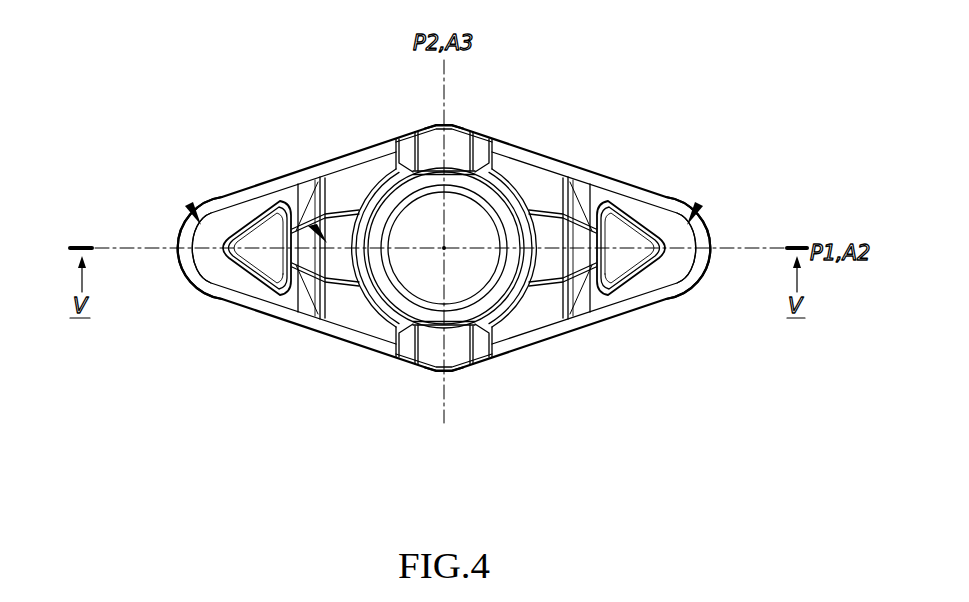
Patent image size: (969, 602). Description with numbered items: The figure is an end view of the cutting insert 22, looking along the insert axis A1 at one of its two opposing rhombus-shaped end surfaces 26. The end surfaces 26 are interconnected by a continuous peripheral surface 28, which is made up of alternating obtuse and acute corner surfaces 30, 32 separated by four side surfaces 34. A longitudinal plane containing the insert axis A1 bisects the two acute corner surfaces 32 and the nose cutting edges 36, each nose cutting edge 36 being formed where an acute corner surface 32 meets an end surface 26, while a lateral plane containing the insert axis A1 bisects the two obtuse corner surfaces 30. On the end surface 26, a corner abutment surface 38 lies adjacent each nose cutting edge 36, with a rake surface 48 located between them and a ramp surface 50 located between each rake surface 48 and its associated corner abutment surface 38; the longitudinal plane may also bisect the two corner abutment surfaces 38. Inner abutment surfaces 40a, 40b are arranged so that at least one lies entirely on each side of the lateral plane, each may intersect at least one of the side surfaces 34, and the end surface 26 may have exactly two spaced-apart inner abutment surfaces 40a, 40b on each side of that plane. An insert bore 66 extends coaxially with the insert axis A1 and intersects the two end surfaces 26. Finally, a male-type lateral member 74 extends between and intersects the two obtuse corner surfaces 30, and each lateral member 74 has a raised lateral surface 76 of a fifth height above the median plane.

The cutting insert 22 is at (266, 390).
The end surface 26 is at (316, 230).
The peripheral surface 28 is at (608, 163).
The obtuse corner surface 30 is at (438, 126).
The acute corner surface 32 is at (178, 258).
The side surface 34 is at (258, 188).
The nose cutting edge 36 is at (182, 224).
The corner abutment surface 38 is at (262, 263).
The inner abutment surface 40a is at (541, 176).
The inner abutment surface 40b is at (350, 177).
The rake surface 48 is at (190, 208).
The ramp surface 50 is at (221, 265).
The insert bore 66 is at (462, 268).
The lateral member 74 is at (486, 130).
The raised lateral surface 76 is at (461, 133).
The insert axis A1 is at (460, 236).